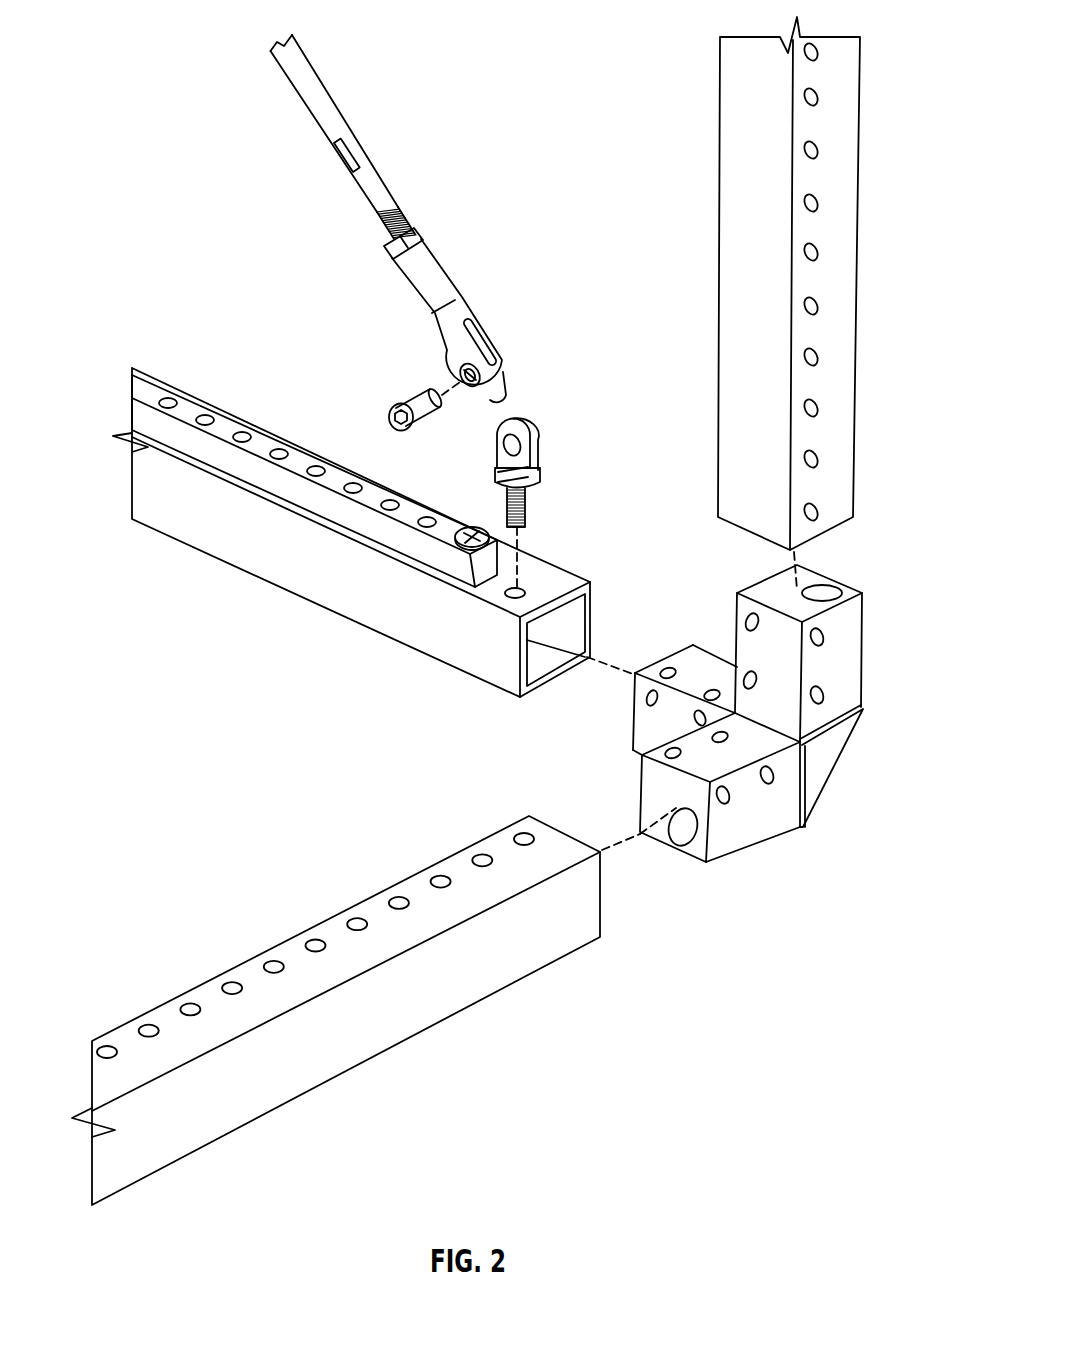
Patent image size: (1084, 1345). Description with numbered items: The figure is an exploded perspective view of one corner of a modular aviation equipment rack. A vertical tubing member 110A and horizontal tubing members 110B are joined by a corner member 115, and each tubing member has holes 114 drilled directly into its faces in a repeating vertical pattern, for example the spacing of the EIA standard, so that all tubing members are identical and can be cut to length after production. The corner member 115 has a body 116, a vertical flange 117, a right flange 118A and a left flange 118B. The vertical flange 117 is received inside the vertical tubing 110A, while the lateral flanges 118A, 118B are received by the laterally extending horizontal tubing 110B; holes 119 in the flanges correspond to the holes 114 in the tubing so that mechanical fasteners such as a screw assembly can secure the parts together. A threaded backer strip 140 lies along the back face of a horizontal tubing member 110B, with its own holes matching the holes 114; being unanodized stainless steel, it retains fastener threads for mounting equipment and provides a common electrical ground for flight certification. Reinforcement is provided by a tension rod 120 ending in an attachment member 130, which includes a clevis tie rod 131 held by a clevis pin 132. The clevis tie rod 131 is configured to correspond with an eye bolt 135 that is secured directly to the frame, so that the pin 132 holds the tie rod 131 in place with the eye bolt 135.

The vertical tubing 110A is at (860, 268).
The horizontal tubing 110B is at (310, 600).
The holes 114 is at (816, 150).
The corner member 115 is at (830, 797).
The body 116 is at (820, 743).
The vertical flange 117 is at (828, 653).
The right flange 118A is at (687, 657).
The left flange 118B is at (728, 833).
The holes 119 is at (820, 692).
The tension rod 120 is at (328, 125).
The attachment member 130 is at (455, 235).
The clevis tie rod 131 is at (453, 317).
The clevis pin 132 is at (420, 396).
The eye bolt 135 is at (535, 462).
The threaded backer strip 140 is at (190, 440).